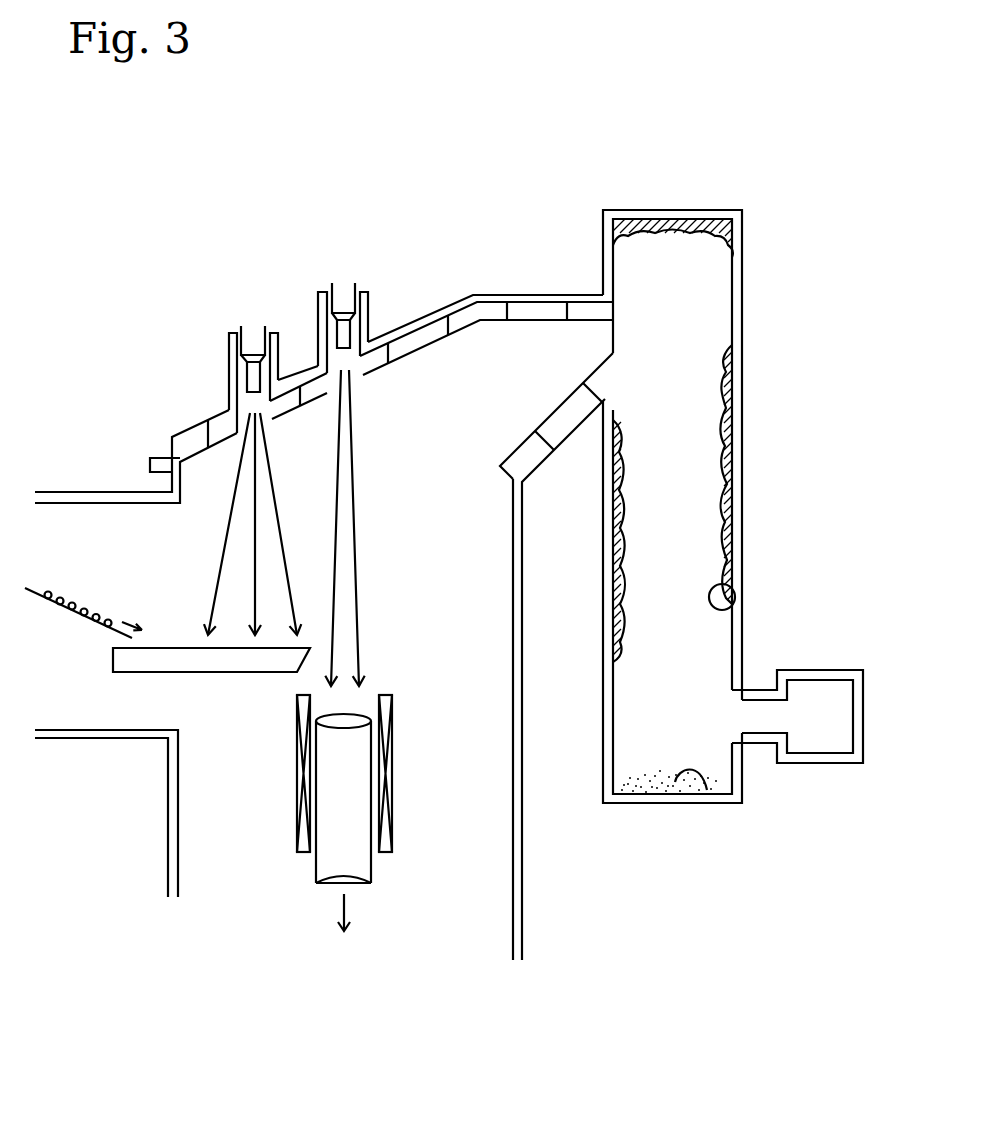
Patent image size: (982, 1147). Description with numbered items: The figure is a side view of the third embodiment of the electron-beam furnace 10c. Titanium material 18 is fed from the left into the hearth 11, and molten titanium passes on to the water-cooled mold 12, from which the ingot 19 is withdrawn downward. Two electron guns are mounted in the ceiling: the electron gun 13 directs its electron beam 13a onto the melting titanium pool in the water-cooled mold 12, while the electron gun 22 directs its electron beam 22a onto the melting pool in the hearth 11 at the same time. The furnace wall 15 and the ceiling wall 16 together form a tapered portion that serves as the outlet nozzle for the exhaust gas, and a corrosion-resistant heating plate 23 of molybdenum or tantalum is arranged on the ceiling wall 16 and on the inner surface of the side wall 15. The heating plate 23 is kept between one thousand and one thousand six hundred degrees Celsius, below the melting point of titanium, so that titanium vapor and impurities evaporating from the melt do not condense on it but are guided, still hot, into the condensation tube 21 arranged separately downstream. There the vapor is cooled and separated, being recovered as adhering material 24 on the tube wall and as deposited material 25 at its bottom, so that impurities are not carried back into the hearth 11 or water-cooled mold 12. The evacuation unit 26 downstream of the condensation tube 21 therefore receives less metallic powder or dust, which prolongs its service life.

The electron-beam furnace 10c is at (163, 360).
The hearth 11 is at (235, 663).
The water-cooled mold 12 is at (392, 758).
The electron gun 13 is at (343, 287).
The electron beam 13a is at (353, 528).
The furnace wall 15 is at (181, 466).
The ceiling wall 16 is at (302, 387).
The titanium material 18 is at (68, 597).
The ingot 19 is at (353, 870).
The condensation tube 21 is at (737, 317).
The electron gun 22 is at (255, 333).
The electron beam 22a is at (282, 497).
The heating plate 23 is at (493, 310).
The adhering material 24 is at (735, 615).
The deposited material 25 is at (706, 790).
The evacuation unit 26 is at (815, 740).